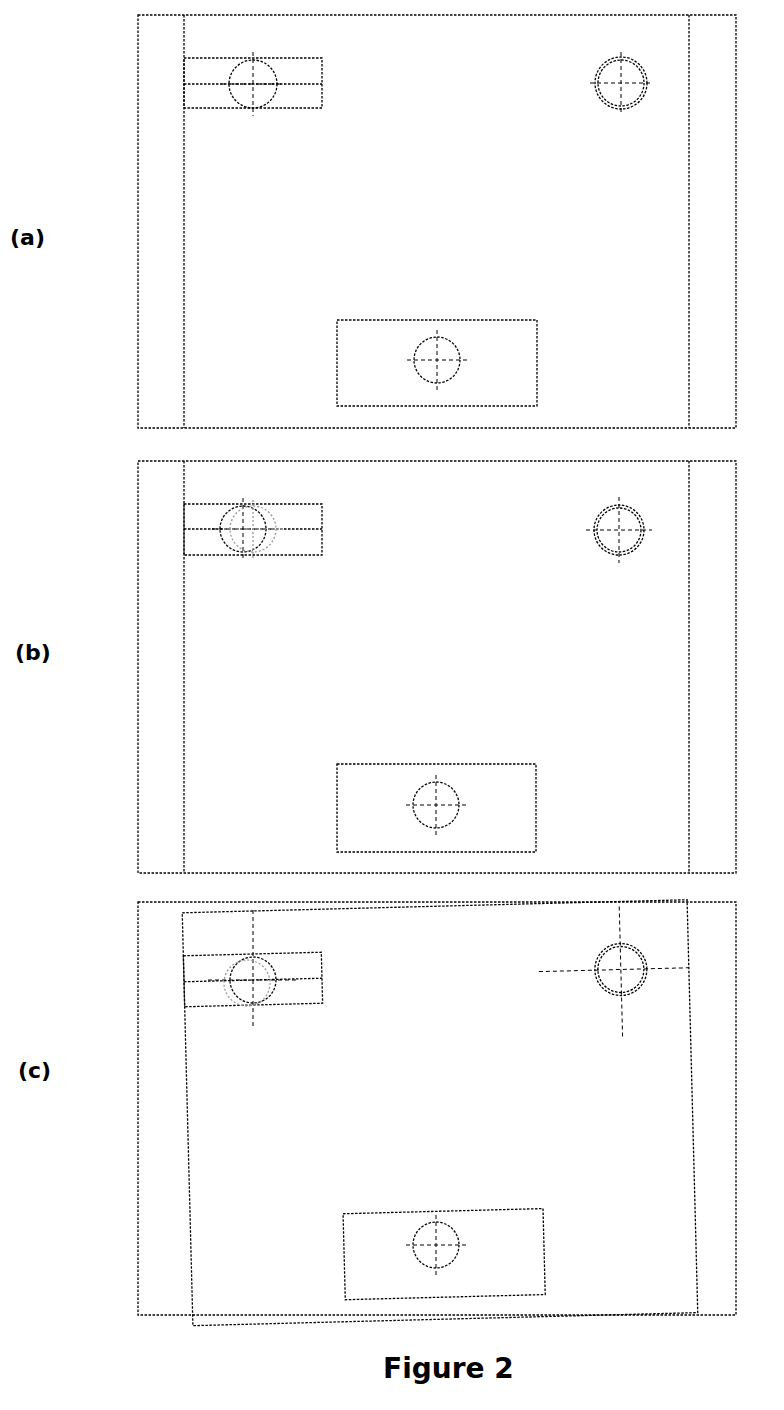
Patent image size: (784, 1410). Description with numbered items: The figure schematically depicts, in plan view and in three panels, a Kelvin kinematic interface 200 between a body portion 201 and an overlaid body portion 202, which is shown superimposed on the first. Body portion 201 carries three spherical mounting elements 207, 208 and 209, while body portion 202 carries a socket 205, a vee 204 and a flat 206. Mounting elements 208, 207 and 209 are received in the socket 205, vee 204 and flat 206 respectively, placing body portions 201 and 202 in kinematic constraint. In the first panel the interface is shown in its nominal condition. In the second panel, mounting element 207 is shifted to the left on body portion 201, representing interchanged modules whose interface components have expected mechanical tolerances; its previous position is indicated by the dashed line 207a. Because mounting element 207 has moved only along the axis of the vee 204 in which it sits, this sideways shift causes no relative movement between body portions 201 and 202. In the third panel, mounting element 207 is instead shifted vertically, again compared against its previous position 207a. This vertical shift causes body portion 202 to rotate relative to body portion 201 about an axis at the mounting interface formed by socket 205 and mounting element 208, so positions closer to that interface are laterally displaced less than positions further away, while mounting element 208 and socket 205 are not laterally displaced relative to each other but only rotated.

The Kelvin kinematic interface 200 is at (120, 61).
The body portion 201 is at (167, 390).
The body portion 202 is at (204, 336).
The vee 204 is at (295, 97).
The socket 205 is at (610, 107).
The flat 206 is at (483, 369).
The spherical mounting element 207 is at (242, 97).
The previous position of mounting element 207a is at (274, 520).
The spherical mounting element 208 is at (633, 97).
The spherical mounting element 209 is at (450, 345).